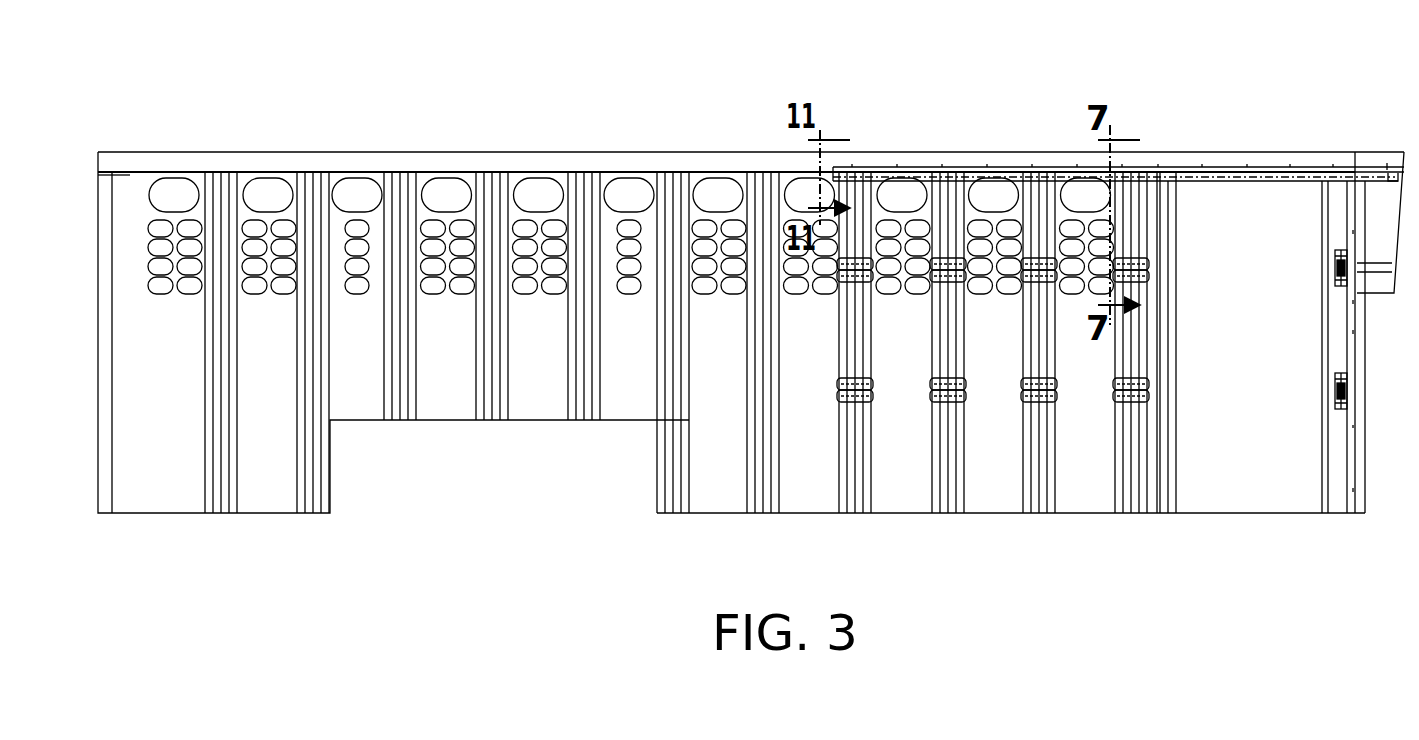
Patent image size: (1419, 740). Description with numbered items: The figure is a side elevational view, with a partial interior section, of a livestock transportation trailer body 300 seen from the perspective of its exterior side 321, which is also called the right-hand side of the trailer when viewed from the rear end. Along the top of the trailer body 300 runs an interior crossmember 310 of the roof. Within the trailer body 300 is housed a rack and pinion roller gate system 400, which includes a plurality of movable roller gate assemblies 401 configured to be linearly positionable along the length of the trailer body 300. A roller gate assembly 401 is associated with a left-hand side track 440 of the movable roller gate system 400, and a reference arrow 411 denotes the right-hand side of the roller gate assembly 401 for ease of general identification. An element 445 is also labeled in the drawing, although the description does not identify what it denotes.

The livestock transportation trailer body 300 is at (722, 133).
The interior crossmember 310 is at (531, 158).
The exterior side 321 is at (1247, 493).
The rack and pinion roller gate system 400 is at (1028, 135).
The movable roller gate assembly 401 is at (1192, 207).
The right-hand side of the roller gate assembly 411 is at (1145, 208).
The left-hand side track 440 is at (1275, 183).
The door edge post 445 is at (1178, 337).